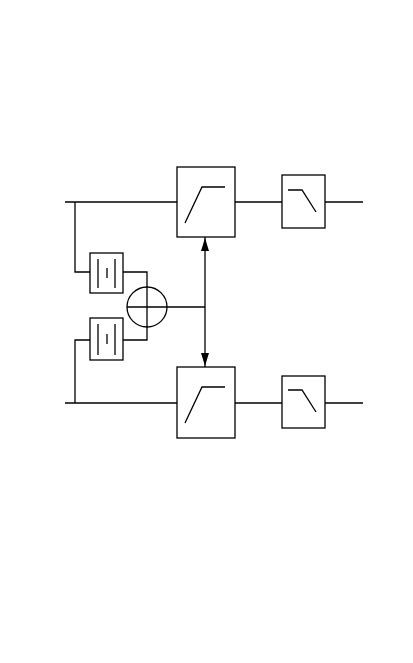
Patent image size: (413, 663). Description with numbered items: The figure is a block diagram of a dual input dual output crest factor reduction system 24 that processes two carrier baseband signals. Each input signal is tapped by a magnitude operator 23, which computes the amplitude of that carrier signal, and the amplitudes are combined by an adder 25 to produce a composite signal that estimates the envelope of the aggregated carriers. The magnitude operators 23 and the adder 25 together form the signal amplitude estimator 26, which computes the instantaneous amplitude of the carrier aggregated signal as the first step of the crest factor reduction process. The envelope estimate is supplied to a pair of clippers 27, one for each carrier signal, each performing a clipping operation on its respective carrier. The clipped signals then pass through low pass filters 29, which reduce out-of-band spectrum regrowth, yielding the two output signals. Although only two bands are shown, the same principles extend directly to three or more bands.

The dual input dual output crest factor reduction system 24 is at (217, 82).
The clipper 27 is at (216, 128).
The low pass filter 29 is at (328, 172).
The signal amplitude estimator 26 is at (114, 220).
The magnitude operator 23 is at (107, 360).
The adder 25 is at (158, 321).